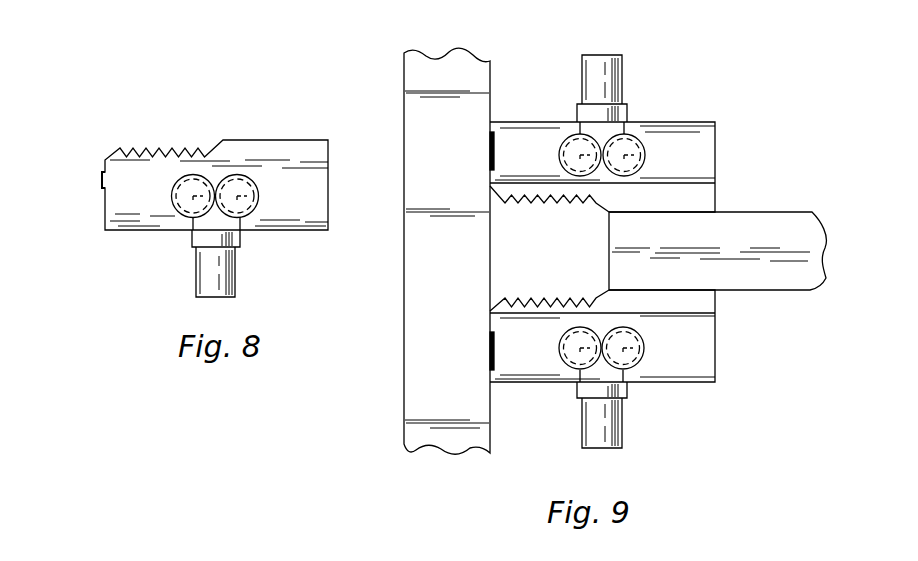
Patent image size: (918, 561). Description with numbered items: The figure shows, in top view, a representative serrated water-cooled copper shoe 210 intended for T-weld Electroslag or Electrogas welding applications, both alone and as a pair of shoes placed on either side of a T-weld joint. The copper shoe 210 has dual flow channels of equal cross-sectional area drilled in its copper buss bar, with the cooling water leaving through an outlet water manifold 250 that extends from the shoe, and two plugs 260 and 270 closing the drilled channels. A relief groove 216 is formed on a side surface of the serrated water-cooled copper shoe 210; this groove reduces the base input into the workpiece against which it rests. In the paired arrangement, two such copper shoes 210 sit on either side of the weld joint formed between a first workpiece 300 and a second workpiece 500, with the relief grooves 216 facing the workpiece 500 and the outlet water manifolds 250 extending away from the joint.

In FIG. 8, the serrated water-cooled copper shoe 210 is at (181, 135).
In FIG. 9, the serrated water-cooled copper shoe 210 is at (677, 353).
In FIG. 8, the relief groove 216 is at (105, 190).
In FIG. 9, the relief groove 216 is at (495, 147).
In FIG. 8, the outlet water manifold 250 is at (207, 272).
In FIG. 9, the outlet water manifold 250 is at (613, 79).
In FIG. 8, the plug 260 is at (237, 197).
In FIG. 8, the plug 270 is at (193, 197).
In FIG. 9, the workpiece 300 is at (752, 228).
In FIG. 9, the workpiece 500 is at (417, 395).